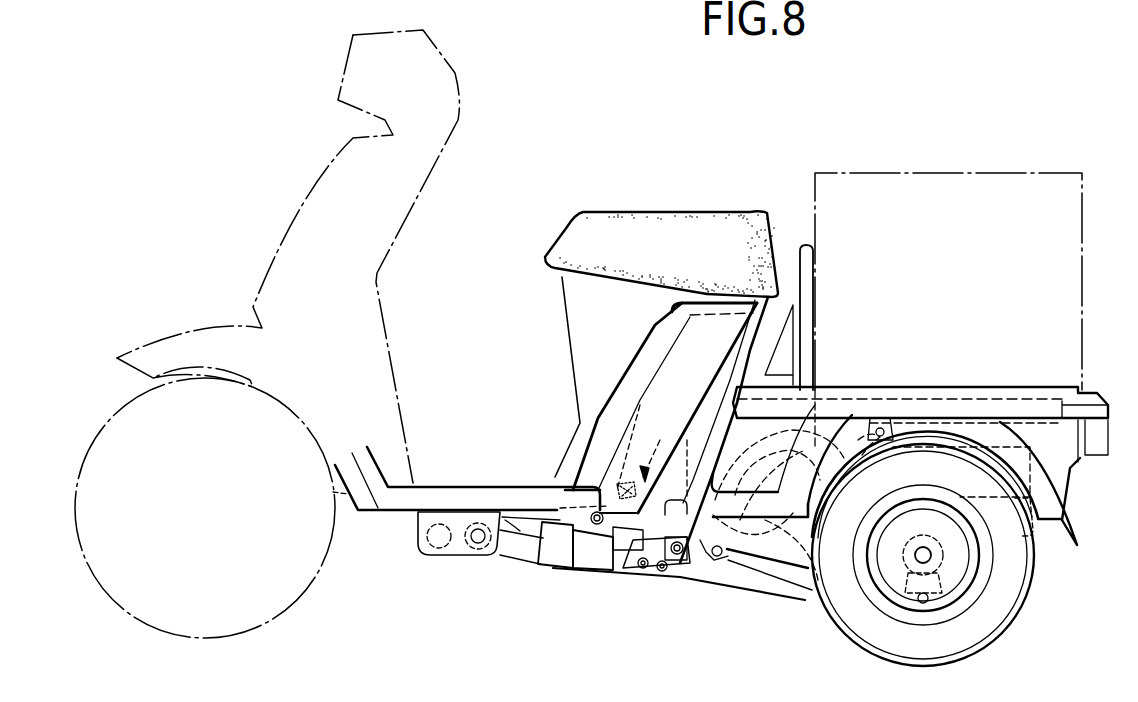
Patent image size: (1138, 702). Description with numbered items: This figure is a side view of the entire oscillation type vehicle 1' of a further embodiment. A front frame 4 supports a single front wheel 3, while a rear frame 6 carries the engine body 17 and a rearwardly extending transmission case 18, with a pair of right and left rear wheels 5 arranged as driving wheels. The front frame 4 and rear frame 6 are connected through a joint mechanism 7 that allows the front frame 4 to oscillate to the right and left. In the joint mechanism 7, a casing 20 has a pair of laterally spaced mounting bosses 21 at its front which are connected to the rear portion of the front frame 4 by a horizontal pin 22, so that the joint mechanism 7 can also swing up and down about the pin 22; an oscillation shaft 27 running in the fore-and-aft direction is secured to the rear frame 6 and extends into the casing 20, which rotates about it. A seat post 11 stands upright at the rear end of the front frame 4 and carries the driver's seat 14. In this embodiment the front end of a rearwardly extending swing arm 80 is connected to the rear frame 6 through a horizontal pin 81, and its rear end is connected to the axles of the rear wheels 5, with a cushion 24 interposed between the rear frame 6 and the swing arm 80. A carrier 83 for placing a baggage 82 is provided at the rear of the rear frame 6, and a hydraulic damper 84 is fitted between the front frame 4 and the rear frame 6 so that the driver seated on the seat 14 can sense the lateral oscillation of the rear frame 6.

The oscillation type vehicle 1' is at (409, 256).
The front wheel 3 is at (303, 590).
The front frame 4 is at (442, 493).
The rear wheels 5 is at (1010, 623).
The rear frame 6 is at (647, 577).
The joint mechanism 7 is at (546, 577).
The seat post 11 is at (598, 418).
The driver's seat 14 is at (647, 217).
The engine body 17 is at (815, 427).
The transmission case 18 is at (803, 567).
The casing 20 is at (592, 560).
The mounting bosses 21 is at (515, 547).
The horizontal pin 22 is at (477, 542).
The rear cushion 24 is at (862, 527).
The oscillation shaft 27 is at (620, 533).
The swing arm 80 is at (760, 585).
The horizontal pin 81 is at (677, 565).
The baggage 82 is at (942, 181).
The carrier 83 is at (948, 386).
The hydraulic damper 84 is at (649, 452).